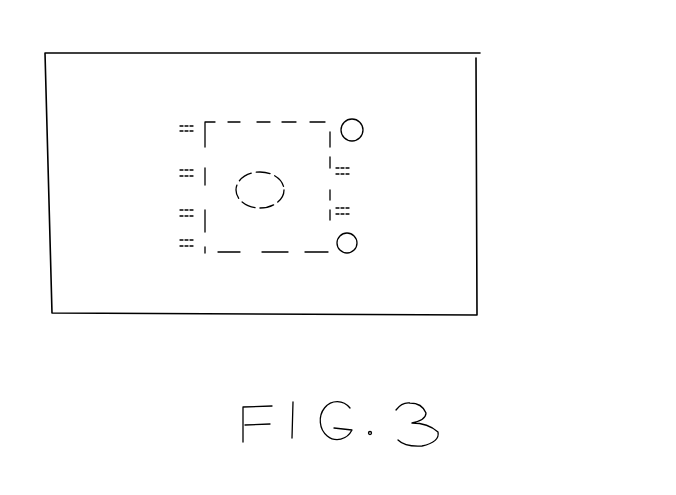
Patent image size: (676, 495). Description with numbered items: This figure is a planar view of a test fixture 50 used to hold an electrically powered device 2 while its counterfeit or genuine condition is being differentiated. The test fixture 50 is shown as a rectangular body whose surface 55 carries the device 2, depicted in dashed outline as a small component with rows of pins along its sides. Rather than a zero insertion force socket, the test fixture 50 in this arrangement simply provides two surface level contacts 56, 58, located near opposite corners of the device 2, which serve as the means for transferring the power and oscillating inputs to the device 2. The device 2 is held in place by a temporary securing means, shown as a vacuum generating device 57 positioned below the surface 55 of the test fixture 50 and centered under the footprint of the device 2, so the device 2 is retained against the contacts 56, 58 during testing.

The electrically powered device 2 is at (258, 120).
The test fixture 50 is at (537, 97).
The surface 55 is at (527, 215).
The surface level contact 56 is at (360, 122).
The vacuum generating device 57 is at (258, 195).
The surface level contact 58 is at (420, 338).